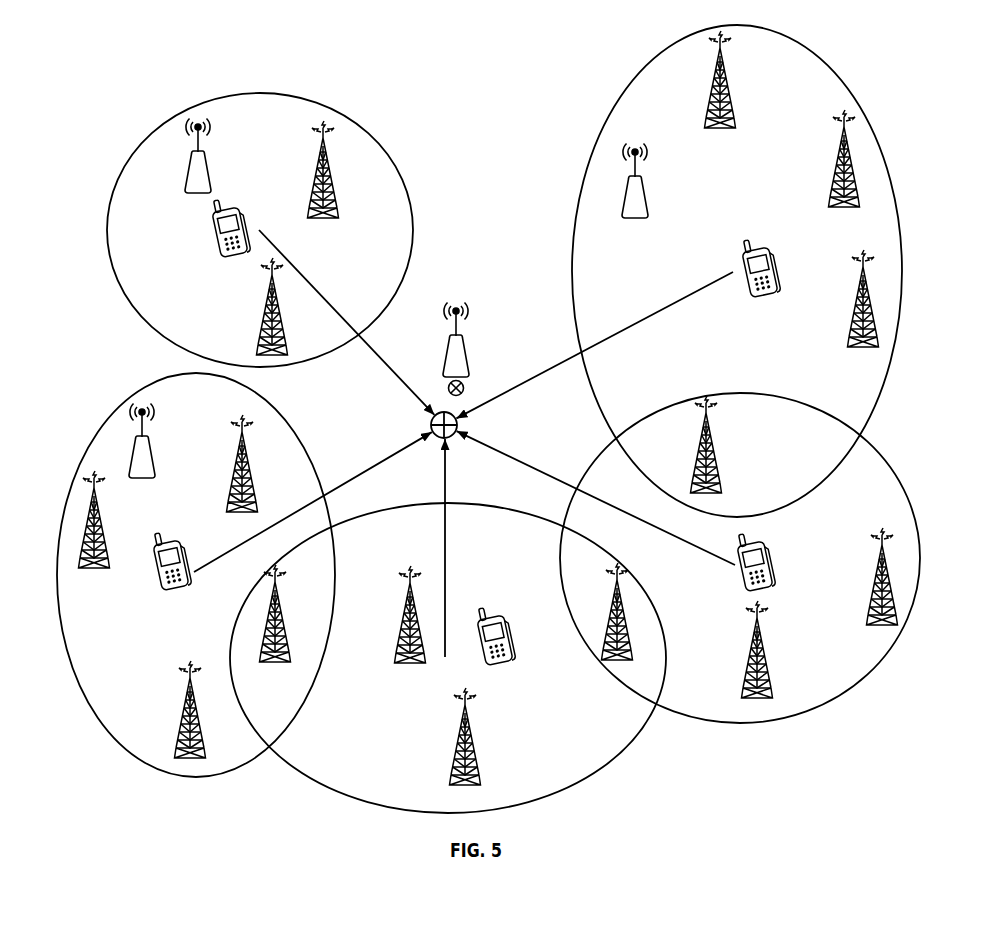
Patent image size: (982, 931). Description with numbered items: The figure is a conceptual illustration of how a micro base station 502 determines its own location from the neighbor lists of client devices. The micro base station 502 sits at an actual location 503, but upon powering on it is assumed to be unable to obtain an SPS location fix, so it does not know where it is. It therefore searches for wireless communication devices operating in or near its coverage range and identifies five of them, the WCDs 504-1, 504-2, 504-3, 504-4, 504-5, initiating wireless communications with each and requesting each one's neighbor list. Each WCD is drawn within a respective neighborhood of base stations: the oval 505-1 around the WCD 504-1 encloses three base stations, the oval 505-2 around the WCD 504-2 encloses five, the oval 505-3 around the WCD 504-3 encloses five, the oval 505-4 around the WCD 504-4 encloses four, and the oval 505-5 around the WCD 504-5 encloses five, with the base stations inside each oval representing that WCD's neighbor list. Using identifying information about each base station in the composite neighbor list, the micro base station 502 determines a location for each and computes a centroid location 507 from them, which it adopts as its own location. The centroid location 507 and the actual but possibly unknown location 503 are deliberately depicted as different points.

The micro base station 502 is at (447, 362).
The actual location 503 is at (465, 390).
The centroid location 507 is at (428, 433).
The WCD 504-1 is at (215, 228).
The WCD 504-2 is at (155, 567).
The WCD 504-3 is at (517, 653).
The WCD 504-4 is at (773, 563).
The WCD 504-5 is at (778, 274).
The oval 505-1 is at (107, 228).
The oval 505-2 is at (56, 577).
The oval 505-3 is at (570, 787).
The oval 505-4 is at (921, 555).
The oval 505-5 is at (903, 271).